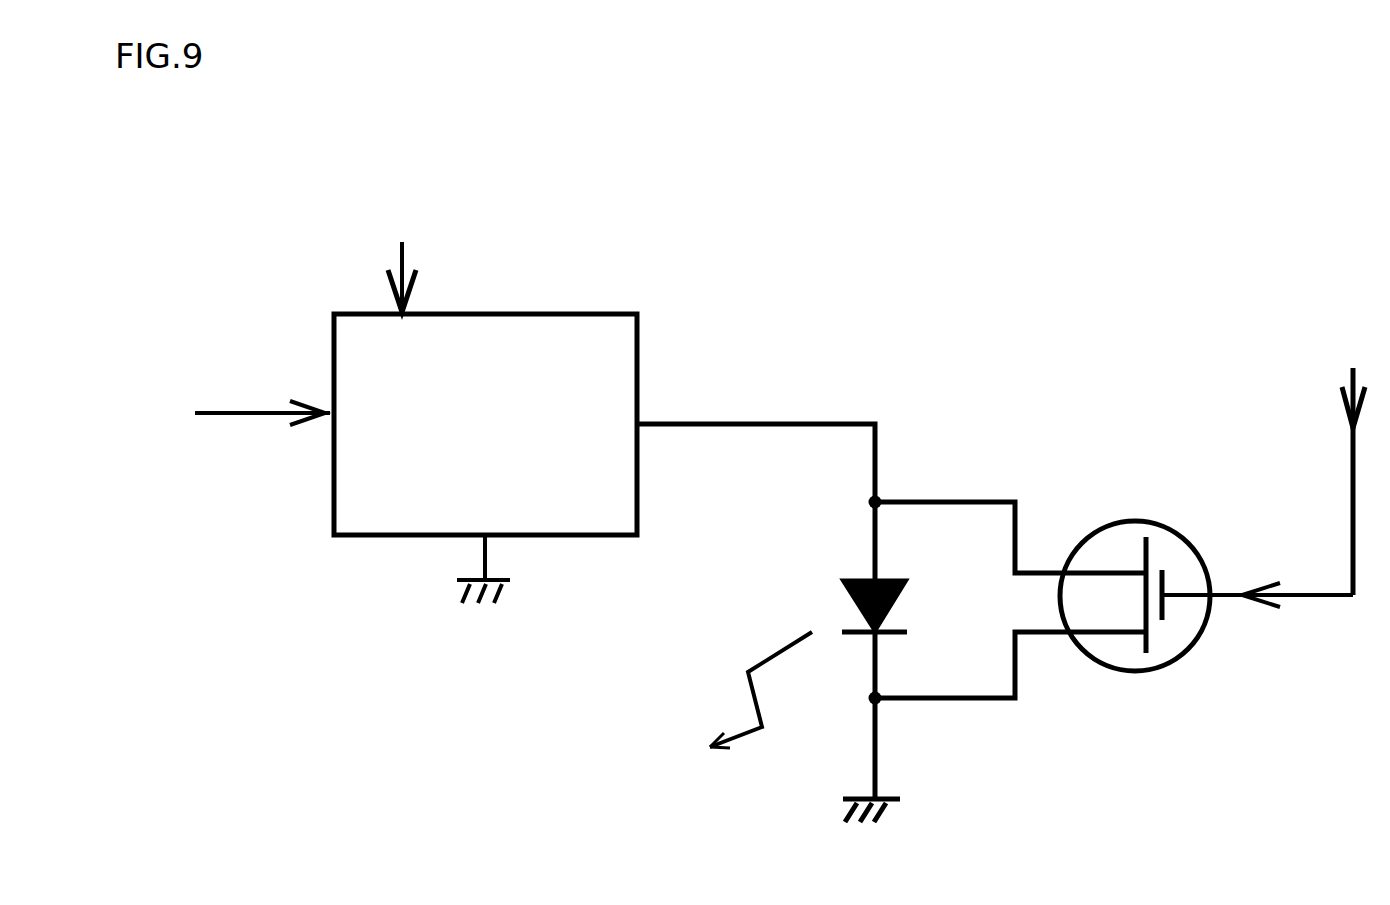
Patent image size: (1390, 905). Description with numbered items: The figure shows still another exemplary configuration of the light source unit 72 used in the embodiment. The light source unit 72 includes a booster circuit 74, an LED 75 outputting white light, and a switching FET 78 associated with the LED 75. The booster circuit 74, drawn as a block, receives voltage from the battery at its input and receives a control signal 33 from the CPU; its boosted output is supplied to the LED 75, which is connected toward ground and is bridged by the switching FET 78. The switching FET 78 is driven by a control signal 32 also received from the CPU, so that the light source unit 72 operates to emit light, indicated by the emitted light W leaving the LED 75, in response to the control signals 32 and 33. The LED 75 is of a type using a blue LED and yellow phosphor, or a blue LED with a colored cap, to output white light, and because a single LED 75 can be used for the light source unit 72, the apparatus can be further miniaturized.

The light source unit 72 is at (957, 132).
The booster circuit 74 is at (588, 314).
The control signal 33 is at (401, 252).
The LED 75 is at (892, 582).
The switching FET 78 is at (1182, 541).
The control signal 32 is at (1351, 450).
The emitted light W is at (761, 664).